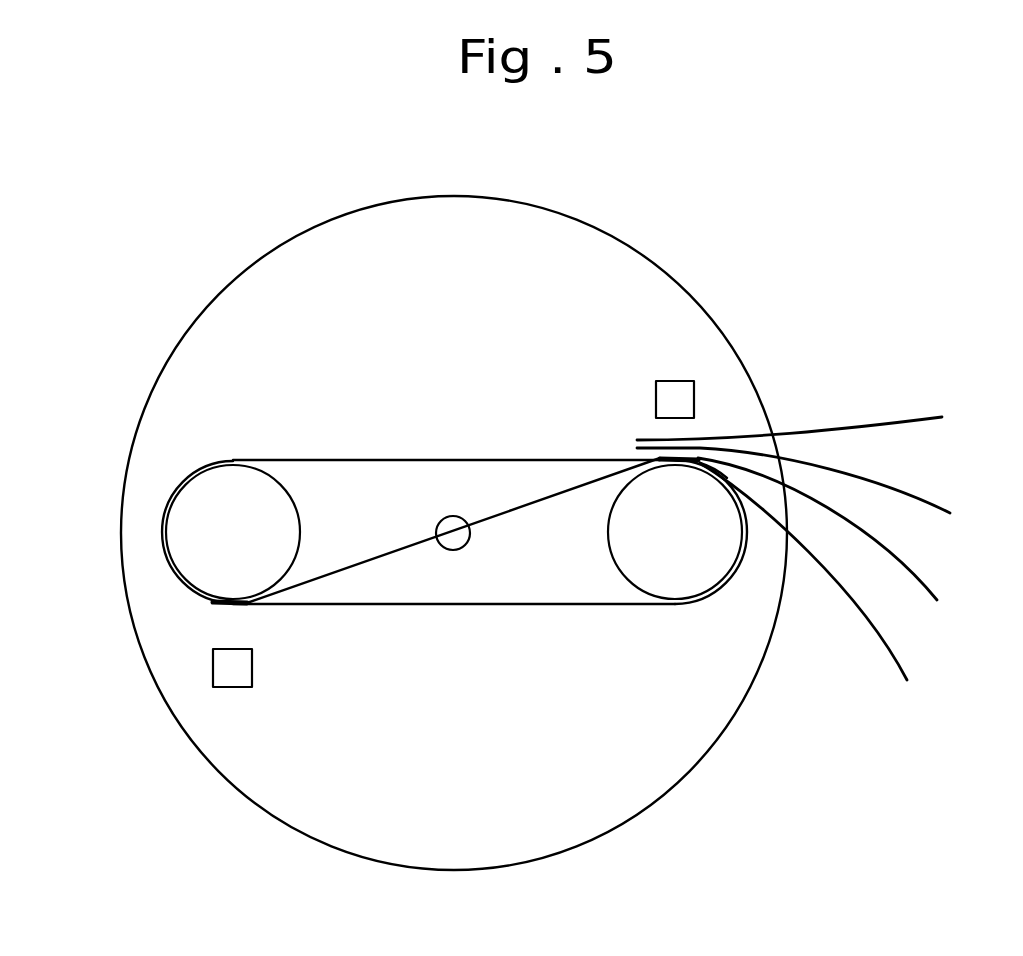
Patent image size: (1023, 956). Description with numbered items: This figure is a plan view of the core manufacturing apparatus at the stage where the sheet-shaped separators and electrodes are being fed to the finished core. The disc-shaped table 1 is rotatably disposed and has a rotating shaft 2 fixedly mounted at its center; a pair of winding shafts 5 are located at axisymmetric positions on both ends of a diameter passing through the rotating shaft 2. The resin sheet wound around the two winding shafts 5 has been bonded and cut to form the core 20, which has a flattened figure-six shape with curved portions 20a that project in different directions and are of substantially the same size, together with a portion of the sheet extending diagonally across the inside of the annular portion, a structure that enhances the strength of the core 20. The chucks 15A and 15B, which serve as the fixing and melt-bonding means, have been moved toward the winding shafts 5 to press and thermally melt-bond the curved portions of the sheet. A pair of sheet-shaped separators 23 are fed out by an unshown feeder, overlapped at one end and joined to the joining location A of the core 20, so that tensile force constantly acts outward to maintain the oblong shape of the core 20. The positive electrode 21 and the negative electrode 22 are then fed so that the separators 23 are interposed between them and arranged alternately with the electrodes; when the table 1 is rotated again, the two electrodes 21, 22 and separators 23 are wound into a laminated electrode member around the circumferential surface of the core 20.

The table 1 is at (657, 800).
The rotating shaft 2 is at (453, 516).
The winding shaft 5 is at (233, 476).
The chuck 15A is at (233, 675).
The chuck 15B is at (677, 390).
The core 20 is at (471, 640).
The curved portion 20a is at (160, 532).
The positive electrode 21 is at (917, 497).
The negative electrode 22 is at (892, 648).
The separator 23 is at (900, 415).
The joining location A is at (228, 605).